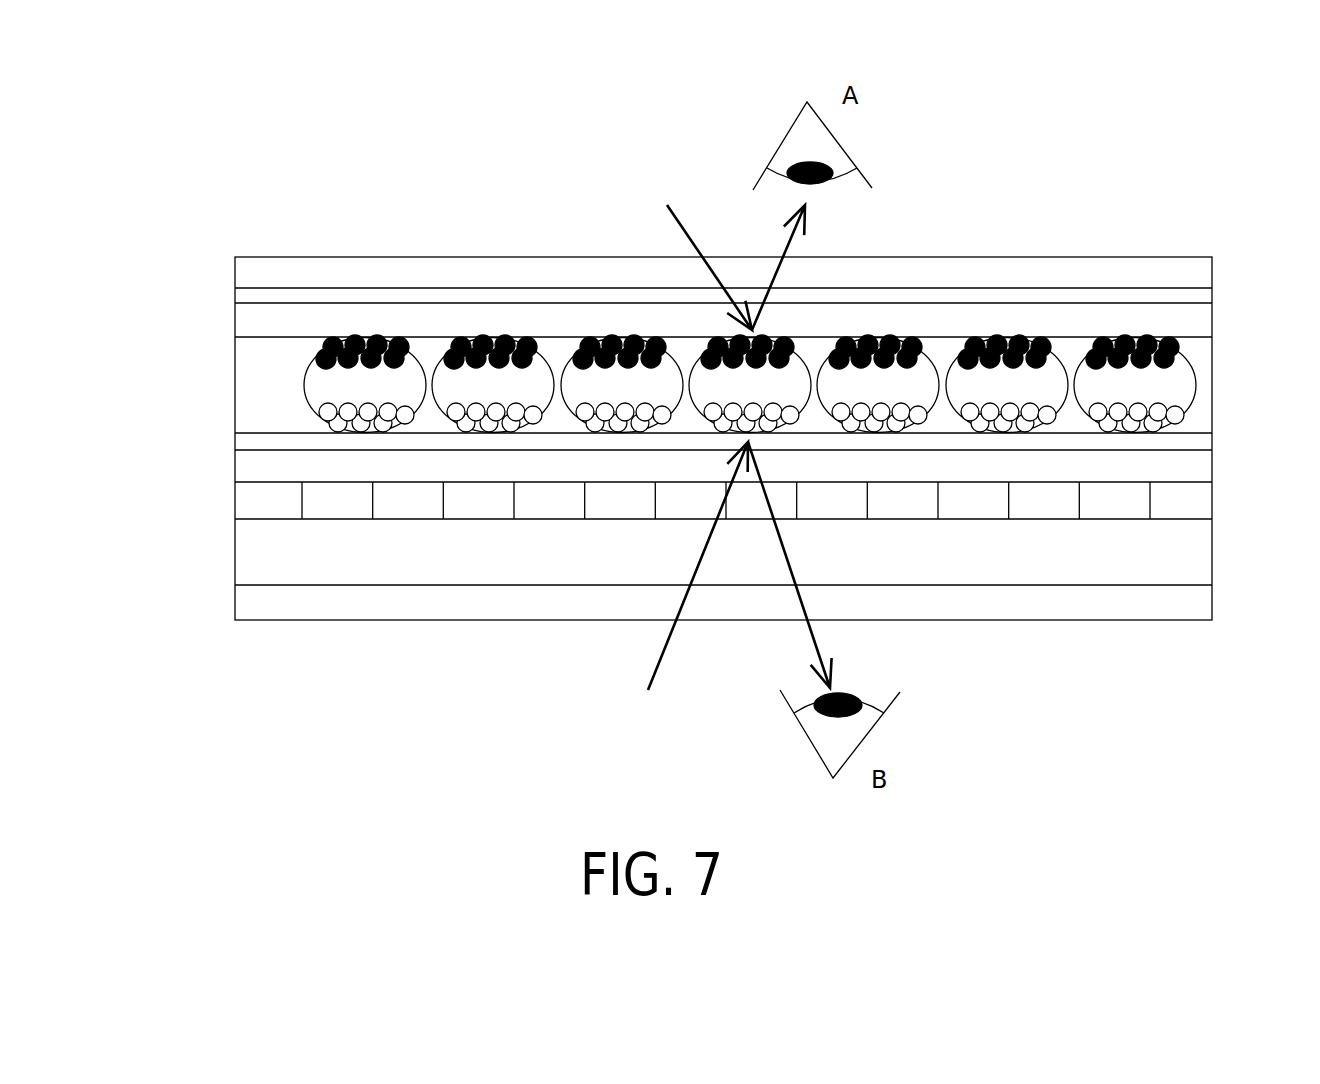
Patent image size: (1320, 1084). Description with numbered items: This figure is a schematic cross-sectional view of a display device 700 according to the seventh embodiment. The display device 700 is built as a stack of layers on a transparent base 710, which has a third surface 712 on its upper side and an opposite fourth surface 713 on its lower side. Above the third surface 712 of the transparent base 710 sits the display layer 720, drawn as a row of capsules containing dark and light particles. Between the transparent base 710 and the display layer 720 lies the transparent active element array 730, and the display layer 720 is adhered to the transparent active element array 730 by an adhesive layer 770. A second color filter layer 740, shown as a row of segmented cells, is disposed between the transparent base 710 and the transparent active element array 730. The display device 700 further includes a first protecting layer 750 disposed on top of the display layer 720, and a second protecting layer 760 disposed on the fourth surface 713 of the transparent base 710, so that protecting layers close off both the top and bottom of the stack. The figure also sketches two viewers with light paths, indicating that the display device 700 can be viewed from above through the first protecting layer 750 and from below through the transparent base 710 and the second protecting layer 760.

The display device 700 is at (718, 489).
The transparent base 710 is at (718, 545).
The third surface 712 is at (1199, 511).
The fourth surface 713 is at (1198, 590).
The display layer 720 is at (219, 303).
The transparent active element array 730 is at (249, 469).
The second color filter layer 740 is at (249, 502).
The first protecting layer 750 is at (249, 272).
The second protecting layer 760 is at (249, 603).
The adhesive layer 770 is at (249, 442).